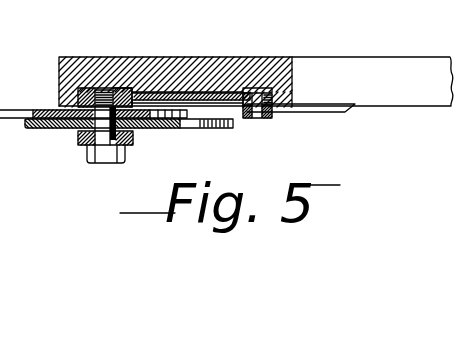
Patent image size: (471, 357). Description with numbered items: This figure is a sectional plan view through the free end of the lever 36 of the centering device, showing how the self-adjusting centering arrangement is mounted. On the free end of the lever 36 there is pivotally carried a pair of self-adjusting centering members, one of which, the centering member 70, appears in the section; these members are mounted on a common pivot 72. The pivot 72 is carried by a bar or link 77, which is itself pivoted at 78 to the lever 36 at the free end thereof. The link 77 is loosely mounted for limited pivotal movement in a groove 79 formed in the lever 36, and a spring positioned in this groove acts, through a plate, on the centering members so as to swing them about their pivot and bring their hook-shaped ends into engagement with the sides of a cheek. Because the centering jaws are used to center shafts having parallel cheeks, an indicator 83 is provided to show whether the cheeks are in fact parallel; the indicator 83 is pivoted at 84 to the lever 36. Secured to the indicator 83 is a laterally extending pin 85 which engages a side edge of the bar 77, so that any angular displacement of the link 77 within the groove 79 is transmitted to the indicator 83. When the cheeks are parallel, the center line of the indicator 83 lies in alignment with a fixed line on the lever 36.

The lever 36 is at (215, 62).
The pivot 72 is at (21, 108).
The self-adjusting centering member 70 is at (185, 122).
The bar or link 77 is at (123, 89).
The groove 79 is at (136, 91).
The pivot 78 is at (96, 137).
The laterally extending pin 85 is at (229, 97).
The pivot 84 is at (257, 119).
The indicator 83 is at (320, 113).